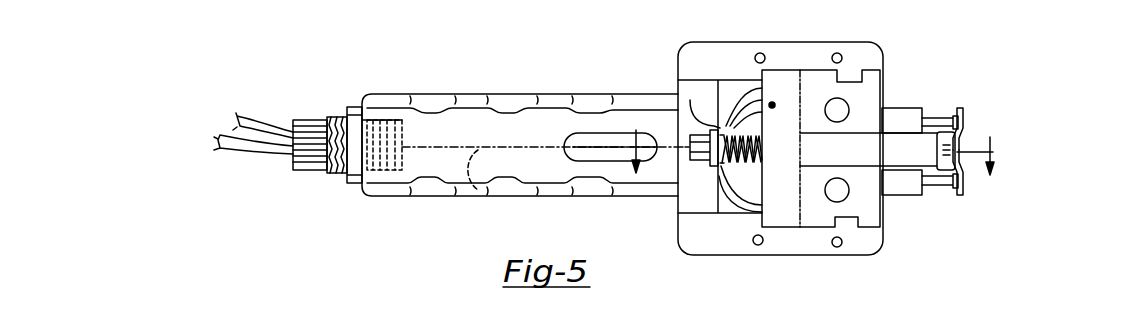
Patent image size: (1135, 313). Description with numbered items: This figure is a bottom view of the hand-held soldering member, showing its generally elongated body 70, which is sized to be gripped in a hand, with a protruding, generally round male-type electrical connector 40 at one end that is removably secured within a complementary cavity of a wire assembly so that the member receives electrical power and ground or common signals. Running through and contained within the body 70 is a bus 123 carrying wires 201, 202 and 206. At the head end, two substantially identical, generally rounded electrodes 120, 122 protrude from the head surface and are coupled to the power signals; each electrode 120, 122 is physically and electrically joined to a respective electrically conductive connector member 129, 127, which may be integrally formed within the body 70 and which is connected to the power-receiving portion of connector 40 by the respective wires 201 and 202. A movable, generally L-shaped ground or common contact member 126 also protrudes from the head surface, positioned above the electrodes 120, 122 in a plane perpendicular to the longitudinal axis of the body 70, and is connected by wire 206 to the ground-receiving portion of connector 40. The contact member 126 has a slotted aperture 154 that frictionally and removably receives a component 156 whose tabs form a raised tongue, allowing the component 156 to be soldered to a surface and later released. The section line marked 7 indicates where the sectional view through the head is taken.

The electrical connector 40 is at (382, 135).
The body 70 is at (433, 196).
The bus 123 is at (478, 190).
The wire 206 is at (690, 100).
The wire 202 is at (750, 96).
The wire 201 is at (740, 240).
The ground contact member 126 is at (840, 152).
The connector member 127 is at (898, 118).
The electrode 122 is at (938, 117).
The connector member 129 is at (899, 183).
The electrode 120 is at (935, 188).
The slotted aperture 154 is at (963, 140).
The component 156 is at (966, 190).
The section line 7- 7 is at (813, 143).